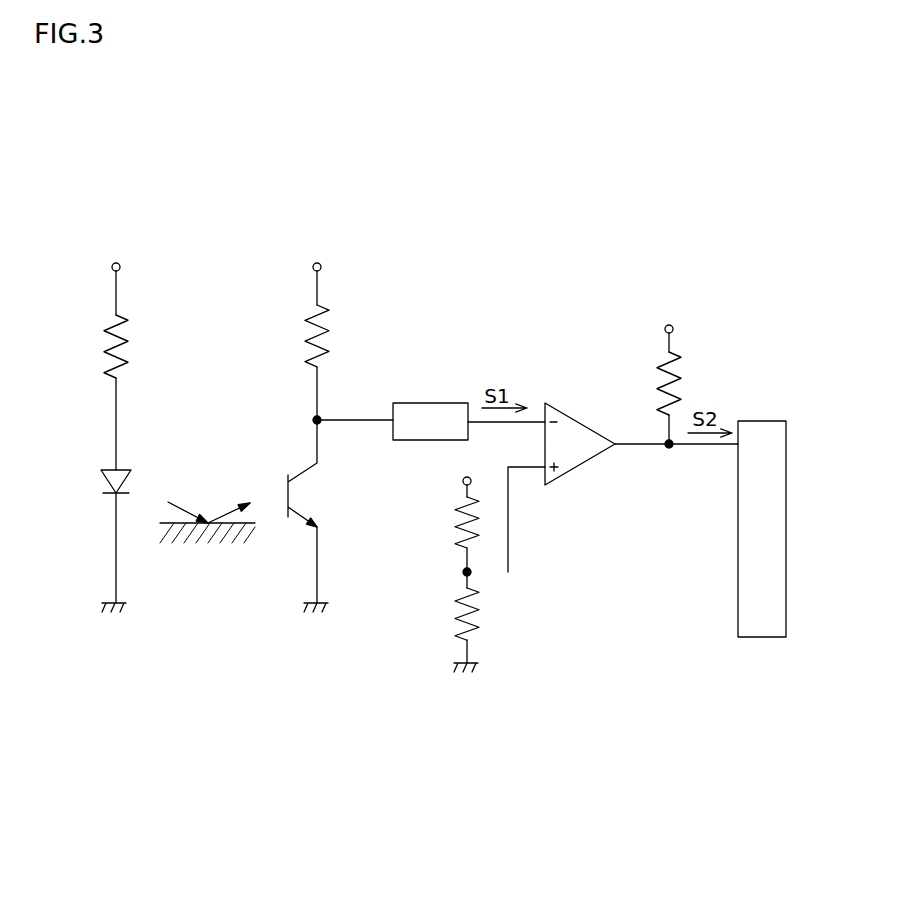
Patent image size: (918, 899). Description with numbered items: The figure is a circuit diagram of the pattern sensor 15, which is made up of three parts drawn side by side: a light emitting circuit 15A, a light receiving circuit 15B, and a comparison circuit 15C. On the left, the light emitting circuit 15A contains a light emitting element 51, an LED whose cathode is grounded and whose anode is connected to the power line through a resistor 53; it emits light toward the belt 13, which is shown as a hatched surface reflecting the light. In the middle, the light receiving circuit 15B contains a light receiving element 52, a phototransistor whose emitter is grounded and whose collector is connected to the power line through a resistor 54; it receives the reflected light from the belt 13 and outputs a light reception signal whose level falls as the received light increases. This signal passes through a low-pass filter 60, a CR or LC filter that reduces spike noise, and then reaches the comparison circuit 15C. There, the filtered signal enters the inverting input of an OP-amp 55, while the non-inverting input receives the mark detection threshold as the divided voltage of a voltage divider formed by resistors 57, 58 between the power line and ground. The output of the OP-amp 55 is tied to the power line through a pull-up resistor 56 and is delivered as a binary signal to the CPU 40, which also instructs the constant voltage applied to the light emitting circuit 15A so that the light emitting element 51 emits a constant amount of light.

The belt 13 is at (223, 544).
The pattern sensor 15 is at (228, 774).
The light emitting circuit 15A is at (183, 702).
The light receiving circuit 15B is at (305, 671).
The comparison circuit 15C is at (443, 696).
The CPU 40 is at (786, 462).
The light emitting element 51 is at (128, 481).
The light receiving element 52 is at (285, 480).
The resistor 53 is at (122, 318).
The resistor 54 is at (328, 323).
The OP-amp 55 is at (578, 417).
The pull-up resistor 56 is at (675, 352).
The resistor 57 is at (458, 528).
The resistor 58 is at (458, 608).
The low-pass filter 60 is at (445, 403).